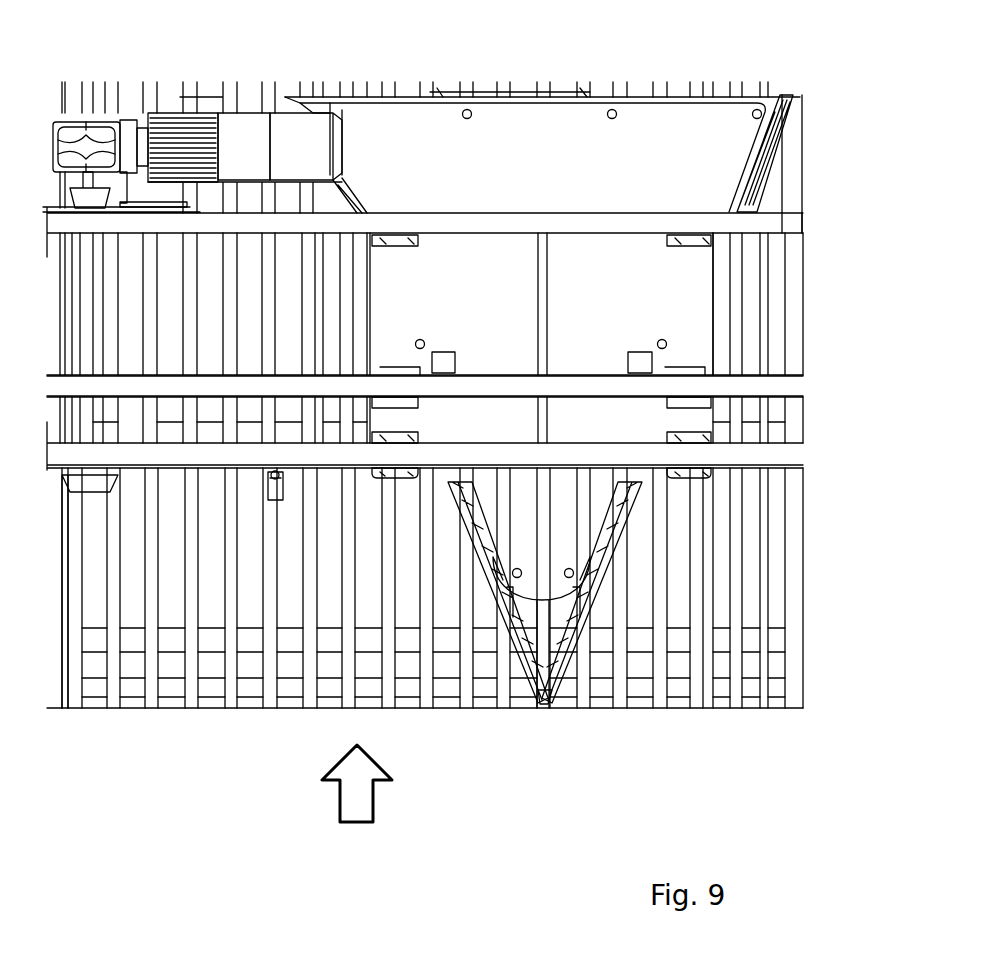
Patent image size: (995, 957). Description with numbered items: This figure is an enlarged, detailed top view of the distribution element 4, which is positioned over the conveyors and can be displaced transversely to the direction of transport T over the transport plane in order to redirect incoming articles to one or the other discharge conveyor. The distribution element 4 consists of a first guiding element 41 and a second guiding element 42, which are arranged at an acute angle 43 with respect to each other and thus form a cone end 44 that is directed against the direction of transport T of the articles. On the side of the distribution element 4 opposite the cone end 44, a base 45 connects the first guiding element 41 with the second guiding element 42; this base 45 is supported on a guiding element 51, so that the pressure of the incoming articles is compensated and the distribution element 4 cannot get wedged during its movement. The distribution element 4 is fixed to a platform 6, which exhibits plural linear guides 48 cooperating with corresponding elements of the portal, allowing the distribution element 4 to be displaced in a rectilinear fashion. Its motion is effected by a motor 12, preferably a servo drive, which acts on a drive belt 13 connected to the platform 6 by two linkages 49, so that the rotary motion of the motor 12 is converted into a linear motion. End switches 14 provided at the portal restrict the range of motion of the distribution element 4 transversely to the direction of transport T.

The distribution element 4 is at (783, 133).
The platform 6 is at (547, 162).
The motor 12 is at (258, 130).
The drive belt 13 is at (773, 381).
The end switches 14 is at (276, 480).
The first guiding element 41 is at (493, 562).
The second guiding element 42 is at (592, 590).
The acute angle 43 is at (490, 556).
The cone end 44 is at (545, 694).
The base 45 is at (400, 97).
The linear guides 48 is at (407, 246).
The linkages 49 is at (404, 370).
The guiding element 51 is at (560, 92).
The direction of transport T is at (350, 797).